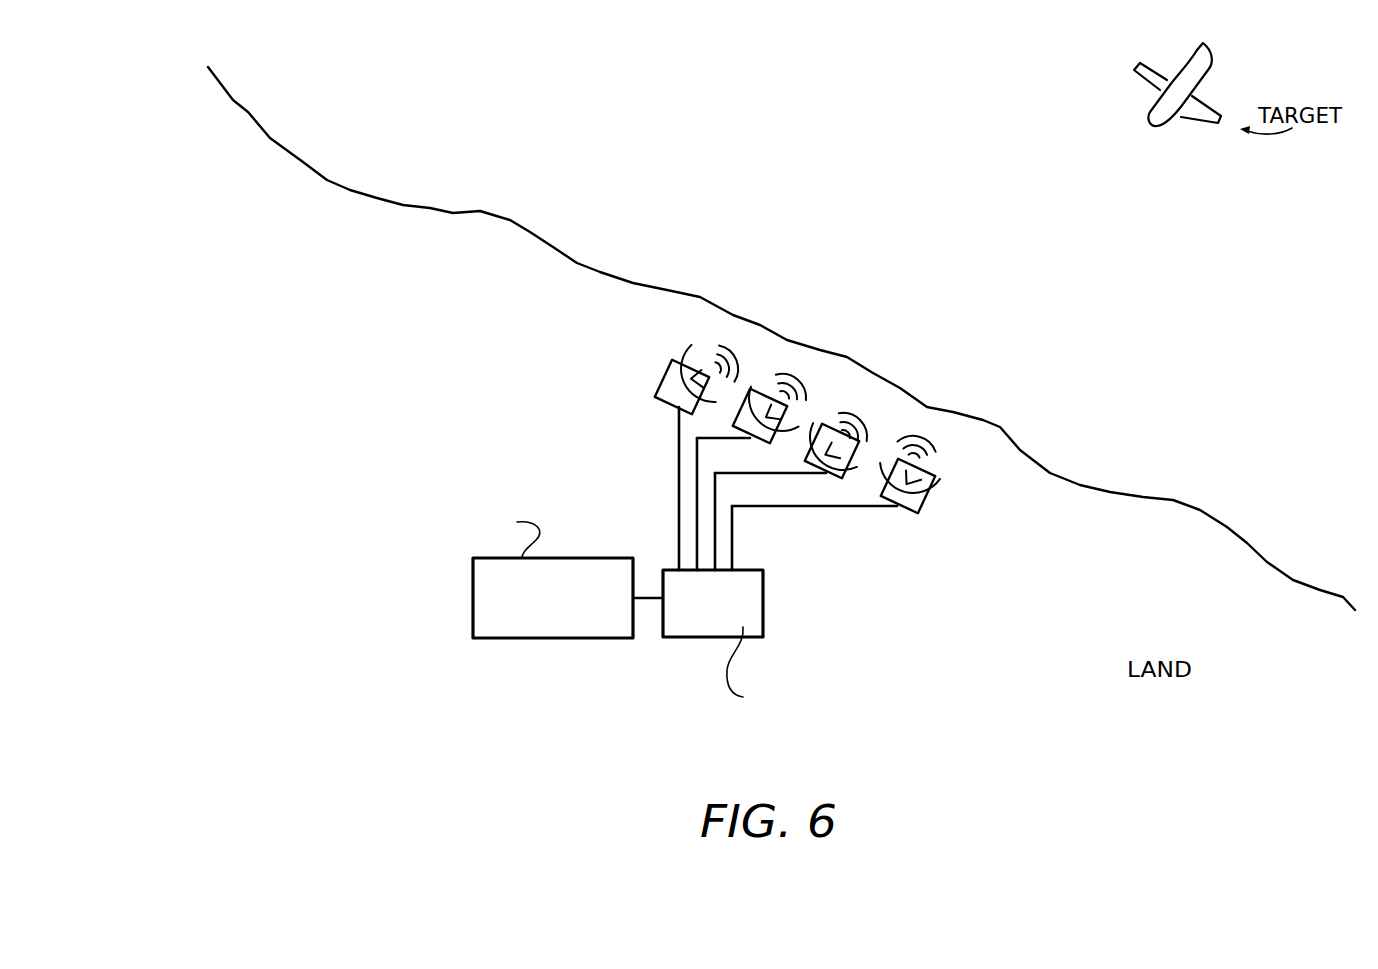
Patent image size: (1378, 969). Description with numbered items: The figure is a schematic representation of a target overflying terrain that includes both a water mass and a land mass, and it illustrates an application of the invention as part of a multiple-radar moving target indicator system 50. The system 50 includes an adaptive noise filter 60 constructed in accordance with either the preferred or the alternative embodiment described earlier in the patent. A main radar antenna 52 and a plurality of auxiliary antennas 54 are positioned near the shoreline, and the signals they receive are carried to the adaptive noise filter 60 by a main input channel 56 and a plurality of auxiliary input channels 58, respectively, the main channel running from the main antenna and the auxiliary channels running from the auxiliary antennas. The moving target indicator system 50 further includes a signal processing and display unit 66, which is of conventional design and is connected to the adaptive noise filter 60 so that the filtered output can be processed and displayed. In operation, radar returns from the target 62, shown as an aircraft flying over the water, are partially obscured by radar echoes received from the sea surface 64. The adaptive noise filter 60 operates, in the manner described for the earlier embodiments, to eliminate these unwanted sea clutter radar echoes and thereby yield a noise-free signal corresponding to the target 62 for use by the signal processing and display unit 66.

The multiple-radar moving target indicator system 50 is at (526, 463).
The main radar antenna 52 is at (661, 381).
The auxiliary antennas 54 is at (898, 501).
The main input channel 56 is at (678, 445).
The auxiliary input channels 58 is at (700, 517).
The adaptive noise filter 60 is at (737, 611).
The target 62 is at (1192, 66).
The sea surface 64 is at (1233, 394).
The signal processing and display unit 66 is at (573, 606).